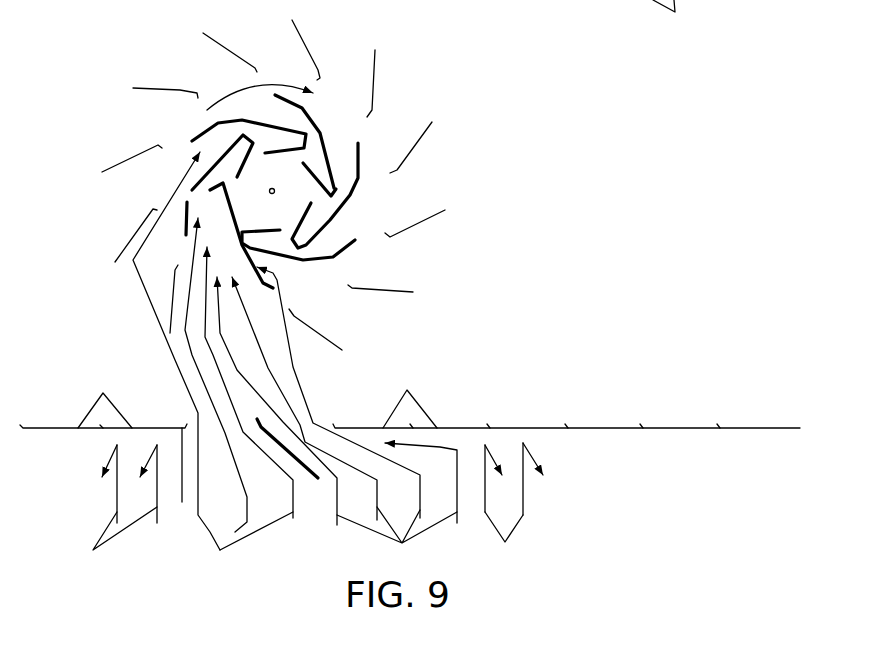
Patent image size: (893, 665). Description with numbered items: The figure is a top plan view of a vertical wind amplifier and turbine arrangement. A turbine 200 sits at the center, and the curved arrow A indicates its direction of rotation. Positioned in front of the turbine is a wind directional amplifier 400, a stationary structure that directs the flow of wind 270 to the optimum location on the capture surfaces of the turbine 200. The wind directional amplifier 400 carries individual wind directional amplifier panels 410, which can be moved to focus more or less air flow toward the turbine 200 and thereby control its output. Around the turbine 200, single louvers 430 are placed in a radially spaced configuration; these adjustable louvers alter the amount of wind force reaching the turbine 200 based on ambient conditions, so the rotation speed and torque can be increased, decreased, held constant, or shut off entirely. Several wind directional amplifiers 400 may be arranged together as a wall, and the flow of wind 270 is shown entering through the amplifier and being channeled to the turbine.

The turbine 200 is at (193, 138).
The flow of wind 270 is at (309, 508).
The wind directional amplifier 400 is at (523, 407).
The wind directional amplifier panel 410 is at (320, 538).
The single louver 430 is at (125, 160).
The rotation direction A is at (232, 92).